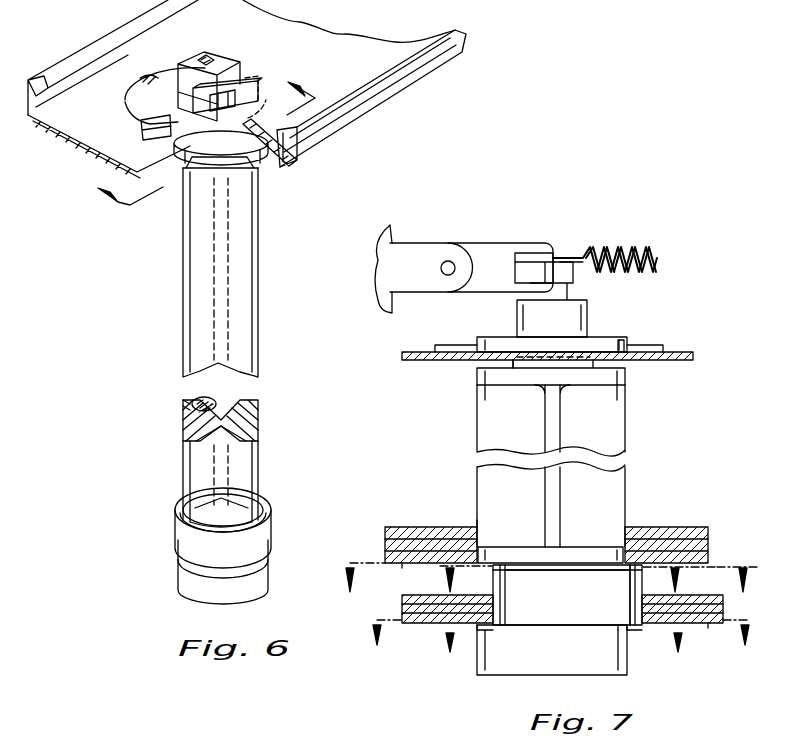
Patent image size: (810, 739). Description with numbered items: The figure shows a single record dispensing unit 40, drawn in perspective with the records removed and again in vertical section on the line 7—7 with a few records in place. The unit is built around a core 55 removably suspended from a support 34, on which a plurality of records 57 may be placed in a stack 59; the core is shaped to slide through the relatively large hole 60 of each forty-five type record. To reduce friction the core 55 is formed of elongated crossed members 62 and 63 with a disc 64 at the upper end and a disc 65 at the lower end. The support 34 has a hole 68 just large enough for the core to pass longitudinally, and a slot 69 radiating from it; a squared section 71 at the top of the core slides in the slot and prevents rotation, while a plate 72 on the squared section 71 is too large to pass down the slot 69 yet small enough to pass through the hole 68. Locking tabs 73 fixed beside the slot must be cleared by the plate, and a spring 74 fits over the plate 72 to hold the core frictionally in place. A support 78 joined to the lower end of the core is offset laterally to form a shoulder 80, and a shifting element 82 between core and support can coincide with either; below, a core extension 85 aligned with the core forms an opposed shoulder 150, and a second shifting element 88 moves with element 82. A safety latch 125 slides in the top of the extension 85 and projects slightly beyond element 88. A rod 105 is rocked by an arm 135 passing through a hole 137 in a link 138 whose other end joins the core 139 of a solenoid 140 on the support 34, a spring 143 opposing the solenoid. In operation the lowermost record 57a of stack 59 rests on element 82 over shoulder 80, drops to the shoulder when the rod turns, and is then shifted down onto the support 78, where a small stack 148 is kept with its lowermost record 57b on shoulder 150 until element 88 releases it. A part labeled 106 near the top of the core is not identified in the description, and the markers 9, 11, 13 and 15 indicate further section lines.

In FIG. 6, the support 34 is at (338, 33).
In FIG. 7, the support 34 is at (688, 360).
In FIG. 6, the dispensing unit 40 is at (182, 316).
In FIG. 7, the dispensing unit 40 is at (627, 420).
In FIG. 6, the core 55 is at (187, 290).
In FIG. 7, the core 55 is at (477, 437).
In FIG. 7, the record 57 is at (430, 525).
In FIG. 7, the lowermost record 57a is at (407, 565).
In FIG. 7, the lowermost record 57b is at (710, 625).
In FIG. 7, the stack 59 is at (680, 525).
In FIG. 7, the hole 60 is at (477, 527).
In FIG. 6, the crossed member 62 is at (183, 463).
In FIG. 7, the crossed member 62 is at (622, 482).
In FIG. 6, the crossed member 63 is at (248, 457).
In FIG. 7, the crossed member 63 is at (555, 487).
In FIG. 6, the disc 64 is at (240, 170).
In FIG. 7, the disc 64 is at (613, 377).
In FIG. 6, the disc 65 is at (177, 497).
In FIG. 7, the disc 65 is at (577, 553).
In FIG. 6, the hole 68 is at (127, 88).
In FIG. 6, the slot 69 is at (253, 113).
In FIG. 7, the slot 69 is at (512, 362).
In FIG. 6, the squared section 71 is at (187, 173).
In FIG. 7, the squared section 71 is at (595, 350).
In FIG. 6, the plate 72 is at (180, 112).
In FIG. 7, the plate 72 is at (623, 343).
In FIG. 6, the locking tab 73 is at (143, 140).
In FIG. 7, the locking tab 73 is at (457, 347).
In FIG. 6, the spring 74 is at (303, 156).
In FIG. 6, the support 78 is at (272, 530).
In FIG. 7, the support 78 is at (507, 583).
In FIG. 6, the shoulder 80 is at (273, 508).
In FIG. 7, the shoulder 80 is at (608, 562).
In FIG. 6, the shifting element 82 is at (267, 490).
In FIG. 7, the shifting element 82 is at (532, 567).
In FIG. 6, the core extension 85 is at (185, 575).
In FIG. 7, the core extension 85 is at (507, 667).
In FIG. 6, the second shifting element 88 is at (187, 558).
In FIG. 7, the second shifting element 88 is at (617, 627).
In FIG. 6, the rod 105 is at (205, 53).
In FIG. 6, the boss shoulder 106 is at (193, 422).
In FIG. 7, the latch 125 is at (632, 630).
In FIG. 6, the arm 135 is at (222, 70).
In FIG. 7, the arm 135 is at (567, 287).
In FIG. 6, the hole 137 is at (250, 83).
In FIG. 7, the hole 137 is at (530, 252).
In FIG. 6, the link 138 is at (157, 123).
In FIG. 7, the link 138 is at (492, 250).
In FIG. 7, the solenoid core 139 is at (415, 243).
In FIG. 7, the solenoid 140 is at (387, 300).
In FIG. 7, the spring 143 is at (613, 248).
In FIG. 7, the small stack 148 is at (402, 606).
In FIG. 6, the shoulder 150 is at (175, 543).
In FIG. 7, the shoulder 150 is at (482, 627).
In FIG. 6, the section line 7 is at (204, 145).
In FIG. 7, the section line 9- 9 is at (545, 578).
In FIG. 7, the section line 11- 11 is at (573, 580).
In FIG. 7, the section line 13- 13 is at (564, 644).
In FIG. 7, the section line 15- 15 is at (569, 650).